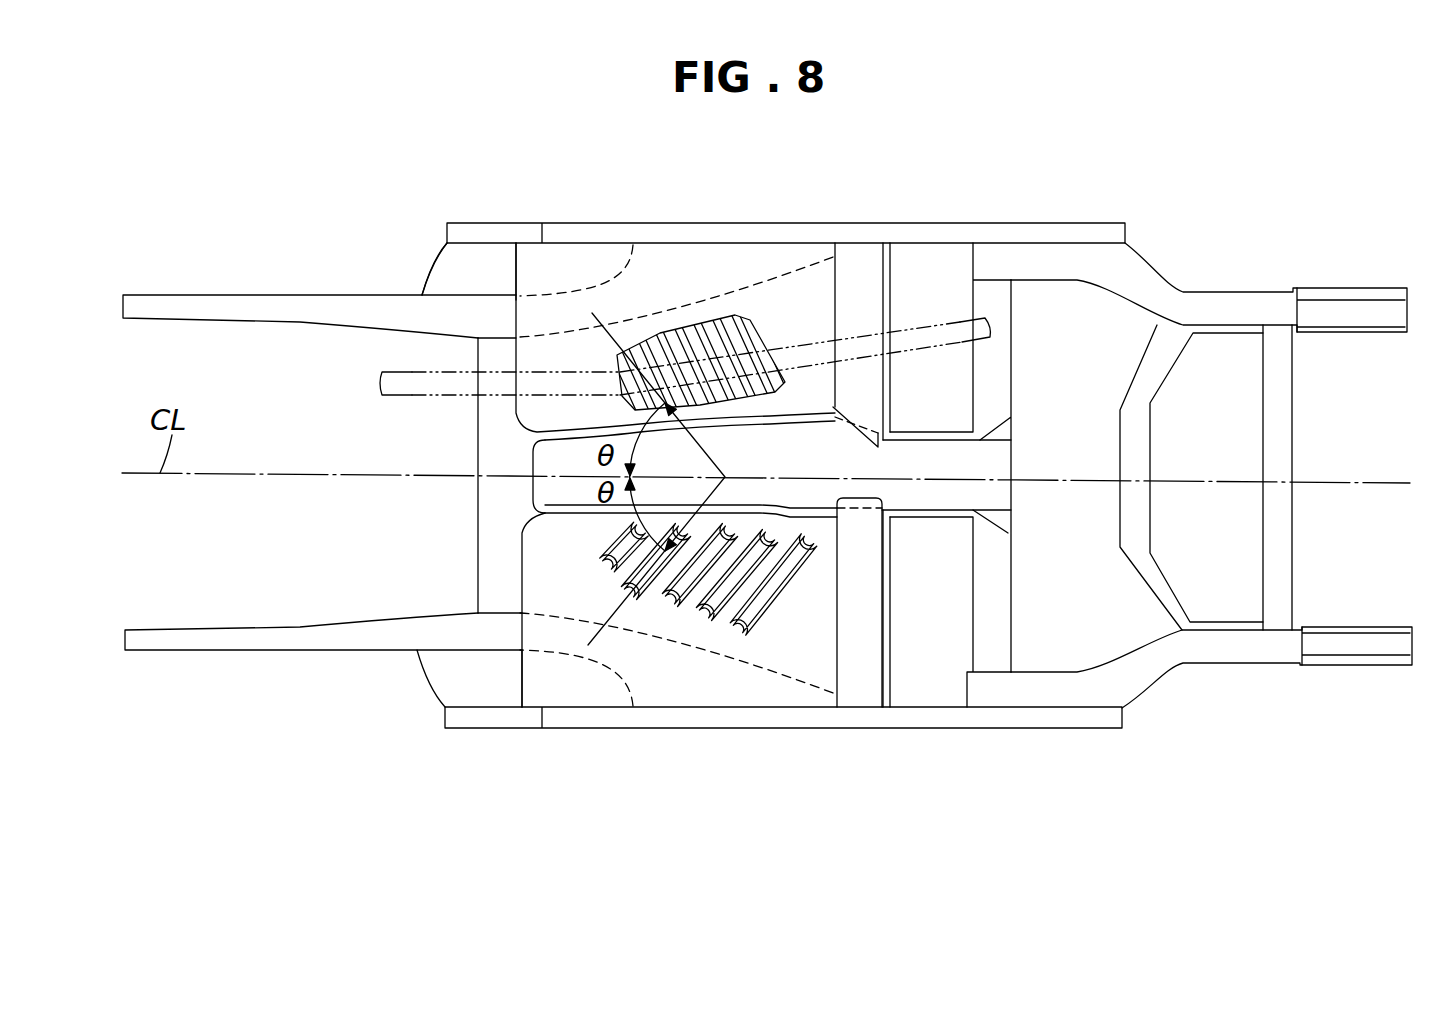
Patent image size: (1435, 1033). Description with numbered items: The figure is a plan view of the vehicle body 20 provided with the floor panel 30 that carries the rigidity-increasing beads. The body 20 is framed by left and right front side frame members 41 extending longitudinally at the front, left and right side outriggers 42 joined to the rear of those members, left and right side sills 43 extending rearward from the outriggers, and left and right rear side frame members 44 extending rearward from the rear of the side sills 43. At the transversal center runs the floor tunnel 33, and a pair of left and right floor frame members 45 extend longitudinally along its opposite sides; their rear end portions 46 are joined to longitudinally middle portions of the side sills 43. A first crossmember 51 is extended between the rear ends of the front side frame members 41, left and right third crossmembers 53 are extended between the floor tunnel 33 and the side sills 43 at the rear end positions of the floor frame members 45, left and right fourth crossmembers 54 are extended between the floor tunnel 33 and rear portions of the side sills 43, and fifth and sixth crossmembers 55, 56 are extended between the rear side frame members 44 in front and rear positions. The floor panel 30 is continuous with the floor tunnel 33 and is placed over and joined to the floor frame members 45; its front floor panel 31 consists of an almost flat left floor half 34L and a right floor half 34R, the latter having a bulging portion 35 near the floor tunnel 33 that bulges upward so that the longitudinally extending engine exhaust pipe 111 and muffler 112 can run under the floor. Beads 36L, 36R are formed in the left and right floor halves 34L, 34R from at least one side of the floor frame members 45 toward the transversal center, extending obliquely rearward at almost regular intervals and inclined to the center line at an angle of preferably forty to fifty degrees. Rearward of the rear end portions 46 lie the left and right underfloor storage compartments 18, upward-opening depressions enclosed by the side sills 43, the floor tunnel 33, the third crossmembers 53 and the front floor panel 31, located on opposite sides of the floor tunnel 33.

The body 20 is at (190, 215).
The front side frame member 41 is at (269, 303).
The side outrigger 42 is at (450, 273).
The side sill 43 is at (467, 227).
The rear side frame member 44 is at (1238, 310).
The floor frame member 45 is at (539, 293).
The rear end portion 46 is at (624, 276).
The first crossmember 51 is at (492, 487).
The floor panel 30 is at (552, 572).
The floor tunnel 33 is at (558, 493).
The right floor half 34R is at (815, 280).
The left floor half 34L is at (791, 650).
The front floor panel 31 is at (724, 505).
The muffler 112 is at (811, 306).
The bead 36R is at (733, 317).
The bead 36L is at (732, 647).
The engine exhaust pipe 111 is at (400, 396).
The bulging portion 35 is at (751, 337).
The underfloor storage compartment 18 is at (940, 283).
The third crossmember 53 is at (875, 388).
The fourth crossmember 54 is at (1005, 378).
The fifth crossmember 55 is at (1142, 448).
The sixth crossmember 56 is at (1282, 445).